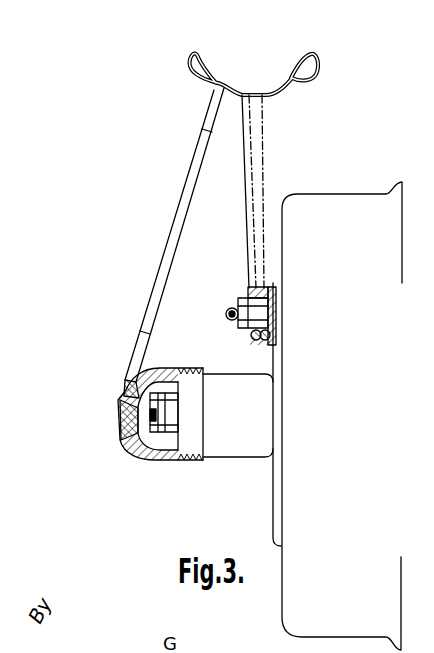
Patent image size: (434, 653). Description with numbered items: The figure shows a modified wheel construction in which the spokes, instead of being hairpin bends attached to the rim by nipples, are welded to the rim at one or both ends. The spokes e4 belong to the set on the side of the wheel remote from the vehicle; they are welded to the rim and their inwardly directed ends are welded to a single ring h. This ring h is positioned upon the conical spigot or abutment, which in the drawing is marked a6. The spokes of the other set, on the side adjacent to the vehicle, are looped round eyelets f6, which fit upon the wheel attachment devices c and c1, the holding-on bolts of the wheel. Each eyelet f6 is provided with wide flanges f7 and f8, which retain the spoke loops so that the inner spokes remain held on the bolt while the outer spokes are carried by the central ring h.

The spokes e4 is at (158, 292).
The single ring h is at (126, 388).
The cap pad a6 is at (126, 421).
The wheel attachment device c is at (226, 316).
The wheel attachment device c1 is at (270, 313).
The eyelets f6 is at (252, 329).
The wide flange f7 is at (254, 339).
The wide flange f8 is at (266, 340).